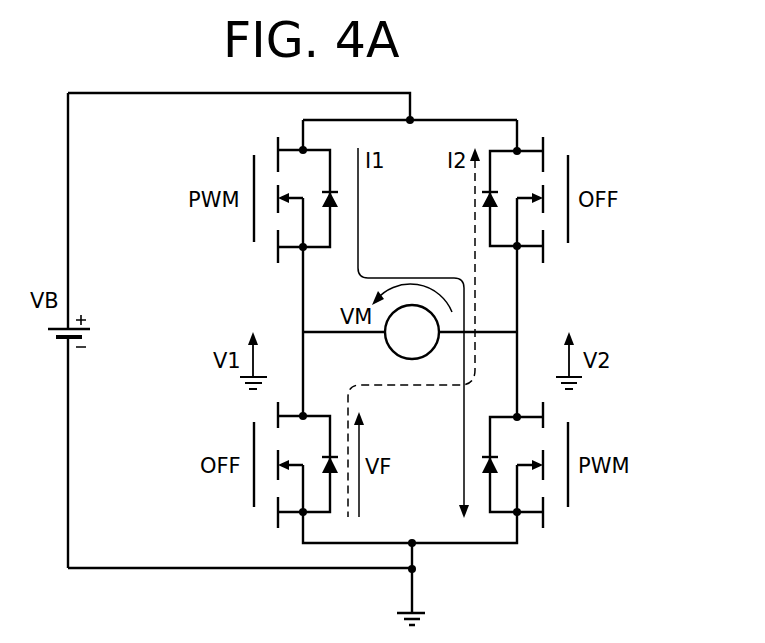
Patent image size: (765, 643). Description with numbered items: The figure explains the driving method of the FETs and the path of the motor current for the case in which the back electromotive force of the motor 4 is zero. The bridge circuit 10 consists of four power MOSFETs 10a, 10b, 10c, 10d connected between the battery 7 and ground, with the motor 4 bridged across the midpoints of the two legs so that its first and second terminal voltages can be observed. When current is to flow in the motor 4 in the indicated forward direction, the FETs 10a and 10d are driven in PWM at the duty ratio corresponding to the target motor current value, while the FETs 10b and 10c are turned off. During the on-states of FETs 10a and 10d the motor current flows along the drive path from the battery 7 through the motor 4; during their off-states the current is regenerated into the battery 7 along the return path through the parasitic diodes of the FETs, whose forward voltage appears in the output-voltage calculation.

The bridge circuit 10 is at (518, 549).
The power MOSFET 10a is at (296, 214).
The power MOSFET 10b is at (525, 214).
The power MOSFET 10c is at (296, 478).
The power MOSFET 10d is at (525, 477).
The motor 4 is at (410, 367).
The power supply (battery) 7 is at (90, 335).